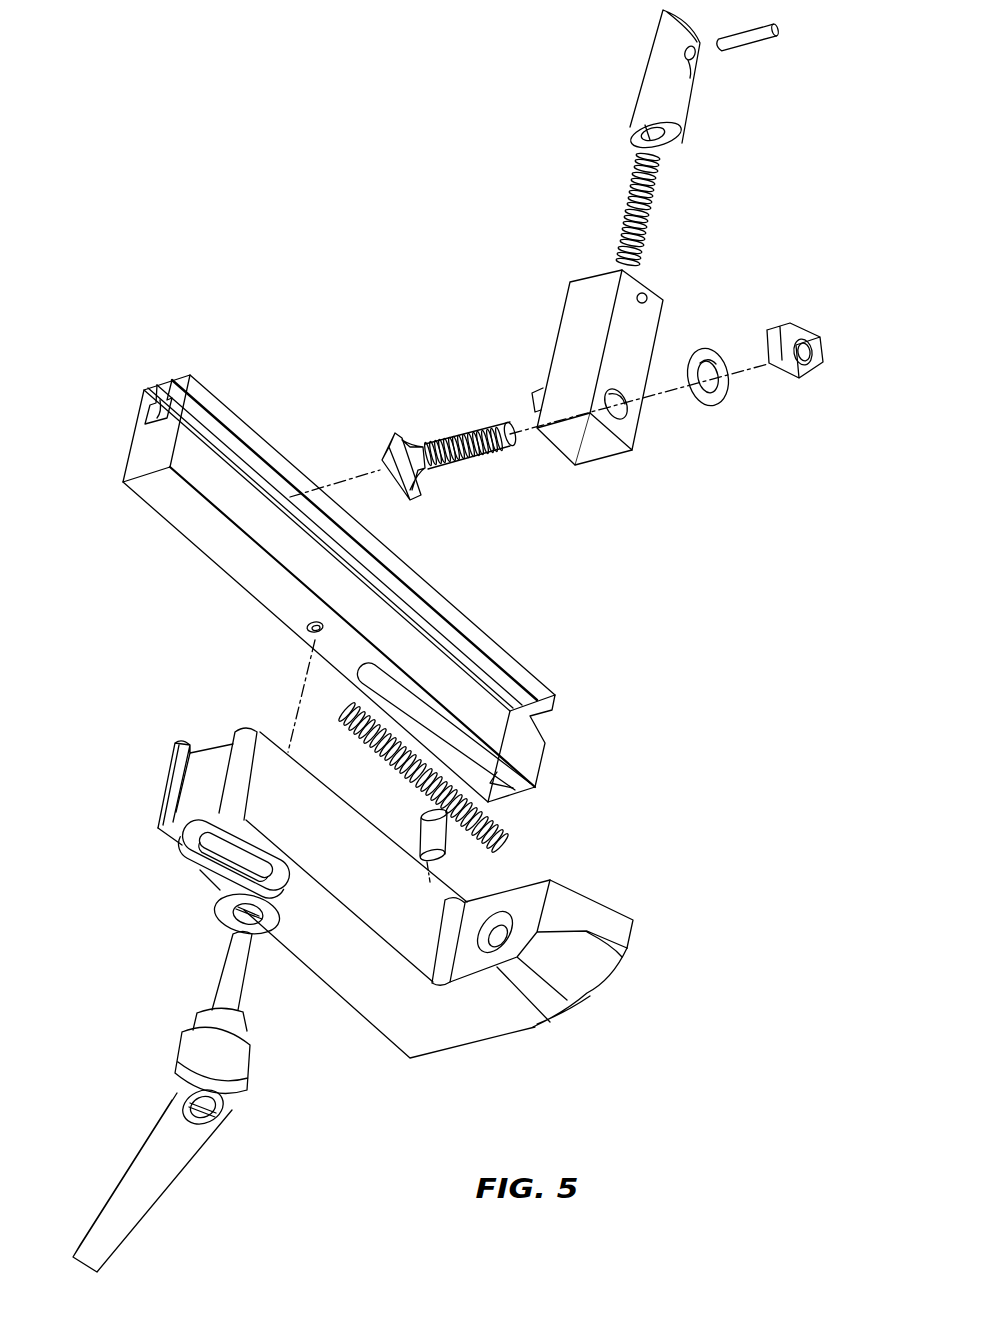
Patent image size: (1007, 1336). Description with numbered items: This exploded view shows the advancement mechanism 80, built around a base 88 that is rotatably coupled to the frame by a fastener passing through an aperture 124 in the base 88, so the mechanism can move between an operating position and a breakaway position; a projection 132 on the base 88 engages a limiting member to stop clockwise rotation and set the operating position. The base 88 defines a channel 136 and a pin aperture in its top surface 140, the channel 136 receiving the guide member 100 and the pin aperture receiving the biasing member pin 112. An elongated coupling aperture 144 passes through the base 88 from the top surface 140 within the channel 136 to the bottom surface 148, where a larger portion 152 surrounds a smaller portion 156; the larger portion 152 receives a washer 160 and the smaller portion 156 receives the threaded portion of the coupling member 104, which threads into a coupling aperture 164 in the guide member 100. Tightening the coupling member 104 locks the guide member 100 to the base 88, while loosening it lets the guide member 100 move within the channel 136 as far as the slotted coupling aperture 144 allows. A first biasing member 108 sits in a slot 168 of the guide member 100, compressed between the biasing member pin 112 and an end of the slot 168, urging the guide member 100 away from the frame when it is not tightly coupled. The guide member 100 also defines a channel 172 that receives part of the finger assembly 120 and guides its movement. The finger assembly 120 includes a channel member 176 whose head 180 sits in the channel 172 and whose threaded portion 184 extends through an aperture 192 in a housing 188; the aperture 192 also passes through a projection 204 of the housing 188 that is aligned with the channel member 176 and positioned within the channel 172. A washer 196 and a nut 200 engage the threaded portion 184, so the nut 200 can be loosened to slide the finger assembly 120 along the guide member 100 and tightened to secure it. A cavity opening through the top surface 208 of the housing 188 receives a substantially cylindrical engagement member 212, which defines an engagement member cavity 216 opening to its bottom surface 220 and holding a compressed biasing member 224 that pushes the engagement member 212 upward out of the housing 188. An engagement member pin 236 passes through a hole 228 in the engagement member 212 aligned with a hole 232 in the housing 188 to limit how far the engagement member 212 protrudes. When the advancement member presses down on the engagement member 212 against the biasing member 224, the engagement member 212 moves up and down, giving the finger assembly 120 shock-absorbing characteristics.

The advancement mechanism 80 is at (174, 230).
The base 88 is at (406, 1060).
The guide member 100 is at (535, 638).
The coupling member 104 is at (80, 1170).
The first biasing member 108 is at (510, 830).
The biasing member pin 112 is at (454, 860).
The finger assembly 120 is at (773, 210).
The aperture 124 is at (494, 940).
The projection 132 is at (630, 902).
The channel 136 is at (210, 745).
The top surface 140 is at (255, 718).
The coupling aperture 144 is at (206, 872).
The bottom surface 148 is at (345, 975).
The larger portion 152 is at (214, 862).
The smaller portion 156 is at (214, 832).
The washer 160 is at (220, 920).
The coupling aperture 164 is at (303, 627).
The slot 168 is at (467, 760).
The channel 172 is at (168, 396).
The channel member 176 is at (452, 418).
The head 180 is at (380, 455).
The threaded portion 184 is at (487, 462).
The housing 188 is at (665, 335).
The aperture 192 is at (610, 417).
The washer 196 is at (717, 402).
The nut 200 is at (778, 335).
The projection 204 is at (537, 393).
The top surface 208 is at (593, 273).
The engagement member 212 is at (668, 22).
The engagement member cavity 216 is at (648, 130).
The bottom surface 220 is at (672, 147).
The biasing member 224 is at (653, 200).
The hole 228 is at (690, 60).
The hole 232 is at (643, 298).
The engagement member pin 236 is at (755, 35).